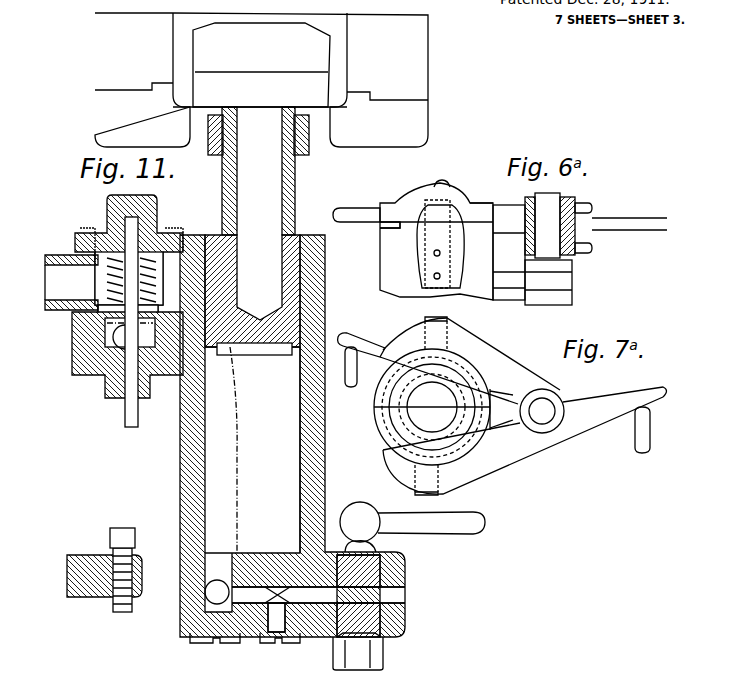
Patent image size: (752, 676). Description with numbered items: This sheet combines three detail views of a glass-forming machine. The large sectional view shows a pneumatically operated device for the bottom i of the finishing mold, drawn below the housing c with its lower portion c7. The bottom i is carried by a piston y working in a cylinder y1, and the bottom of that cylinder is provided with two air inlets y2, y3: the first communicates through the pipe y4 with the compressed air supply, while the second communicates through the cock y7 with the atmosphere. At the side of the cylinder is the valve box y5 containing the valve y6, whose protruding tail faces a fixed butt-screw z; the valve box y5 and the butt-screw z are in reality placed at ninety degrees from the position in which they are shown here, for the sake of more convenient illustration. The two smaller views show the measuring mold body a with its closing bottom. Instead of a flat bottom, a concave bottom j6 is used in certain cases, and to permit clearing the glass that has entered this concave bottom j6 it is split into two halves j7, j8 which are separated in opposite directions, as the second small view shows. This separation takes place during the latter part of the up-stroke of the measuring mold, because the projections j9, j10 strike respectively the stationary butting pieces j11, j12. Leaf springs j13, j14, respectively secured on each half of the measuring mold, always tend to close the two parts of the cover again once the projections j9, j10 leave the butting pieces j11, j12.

In FIG. 11, the housing c is at (261, 80).
In FIG. 11, the housing lower portion c7 is at (282, 122).
In FIG. 11, the bottom of the finishing mold i is at (261, 65).
In FIG. 11, the piston y is at (252, 316).
In FIG. 11, the cylinder y1 is at (298, 425).
In FIG. 11, the air inlet y2 is at (218, 580).
In FIG. 11, the air inlet y3 is at (310, 602).
In FIG. 11, the pipe y4 is at (238, 462).
In FIG. 11, the valve box y5 is at (80, 368).
In FIG. 11, the valve y6 is at (115, 312).
In FIG. 11, the cock y7 is at (362, 598).
In FIG. 11, the butt-screw z is at (118, 530).
In FIG. 6A, the body a is at (436, 241).
In FIG. 6A, the concave bottom j6 is at (470, 207).
In FIG. 7A, the concave bottom j6 is at (480, 353).
In FIG. 7A, the half of the bottom j7 is at (495, 452).
In FIG. 6A, the half of the bottom j8 is at (432, 213).
In FIG. 6A, the projection j9 is at (360, 218).
In FIG. 7A, the projection j9 is at (357, 335).
In FIG. 6A, the projection j10 is at (628, 230).
In FIG. 7A, the projection j10 is at (590, 393).
In FIG. 6A, the stationary butting piece j11 is at (436, 186).
In FIG. 7A, the stationary butting piece j11 is at (425, 319).
In FIG. 7A, the stationary butting piece j12 is at (415, 490).
In FIG. 7A, the leaf spring j13 is at (349, 388).
In FIG. 7A, the leaf spring j14 is at (648, 436).